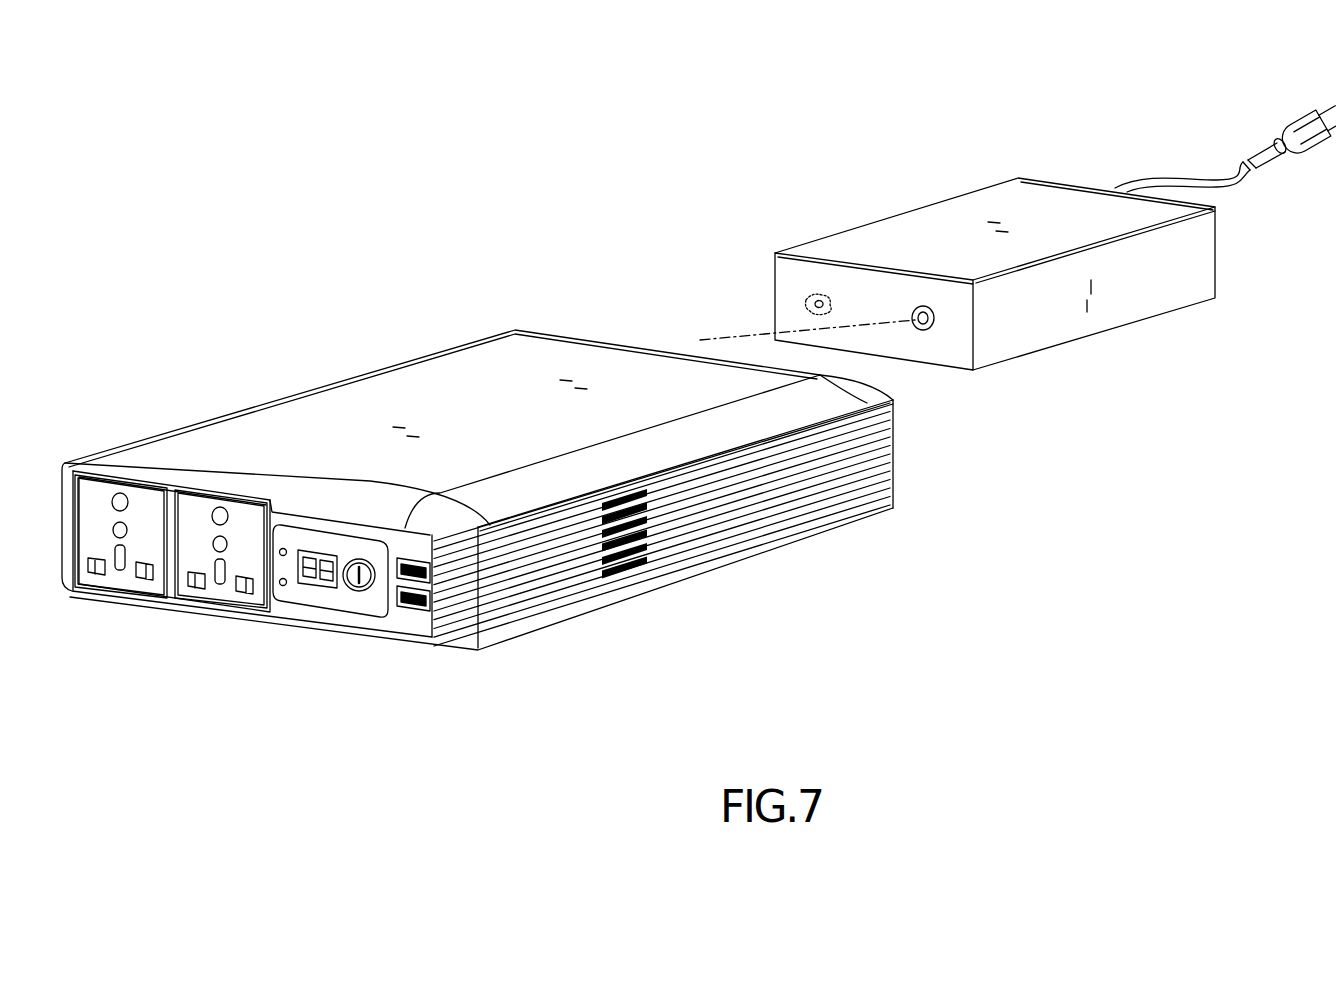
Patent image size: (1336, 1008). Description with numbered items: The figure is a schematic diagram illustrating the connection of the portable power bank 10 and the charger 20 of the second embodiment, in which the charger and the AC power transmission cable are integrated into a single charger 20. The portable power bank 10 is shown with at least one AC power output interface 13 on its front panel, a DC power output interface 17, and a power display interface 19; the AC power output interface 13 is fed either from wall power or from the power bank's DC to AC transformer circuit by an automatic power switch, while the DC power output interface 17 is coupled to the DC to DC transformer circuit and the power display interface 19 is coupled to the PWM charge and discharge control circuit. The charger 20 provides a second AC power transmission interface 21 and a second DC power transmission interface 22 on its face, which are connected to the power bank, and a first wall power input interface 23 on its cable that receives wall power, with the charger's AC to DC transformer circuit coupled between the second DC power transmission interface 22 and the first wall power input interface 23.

The portable power bank 10 is at (477, 496).
The AC power output interface 13 is at (122, 585).
The DC power output interface 17 is at (413, 622).
The power display interface 19 is at (327, 600).
The charger 20 is at (1055, 256).
The second AC power transmission interface 21 is at (805, 295).
The second DC power transmission interface 22 is at (920, 335).
The first wall power input interface 23 is at (1313, 145).